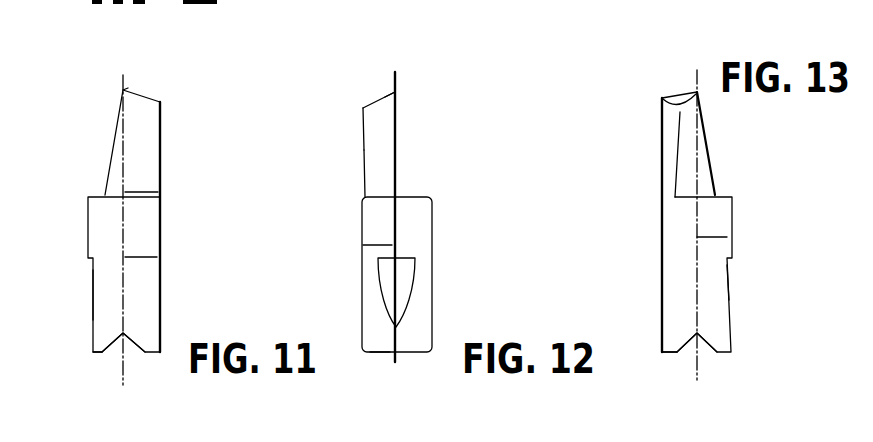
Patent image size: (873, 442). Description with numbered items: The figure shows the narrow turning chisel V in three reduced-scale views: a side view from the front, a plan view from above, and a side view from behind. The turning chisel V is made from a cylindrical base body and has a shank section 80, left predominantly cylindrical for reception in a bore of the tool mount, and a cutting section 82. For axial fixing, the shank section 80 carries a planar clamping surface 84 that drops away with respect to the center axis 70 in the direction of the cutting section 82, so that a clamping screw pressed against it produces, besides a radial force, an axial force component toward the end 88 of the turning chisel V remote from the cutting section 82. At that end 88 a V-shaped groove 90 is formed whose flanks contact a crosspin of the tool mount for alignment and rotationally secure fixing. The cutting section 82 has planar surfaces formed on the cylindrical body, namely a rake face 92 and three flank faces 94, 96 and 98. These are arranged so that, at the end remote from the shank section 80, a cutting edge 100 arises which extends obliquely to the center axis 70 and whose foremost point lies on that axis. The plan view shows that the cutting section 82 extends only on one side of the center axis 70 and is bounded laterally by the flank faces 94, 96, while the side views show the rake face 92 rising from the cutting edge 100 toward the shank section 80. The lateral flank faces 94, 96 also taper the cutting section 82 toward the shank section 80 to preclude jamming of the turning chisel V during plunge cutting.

In FIG. 11, the center axis 70 is at (126, 157).
In FIG. 12, the center axis 70 is at (397, 342).
In FIG. 13, the center axis 70 is at (698, 308).
In FIG. 11, the shank section 80 is at (141, 241).
In FIG. 12, the shank section 80 is at (377, 230).
In FIG. 13, the shank section 80 is at (712, 221).
In FIG. 11, the cutting section 82 is at (160, 127).
In FIG. 12, the cutting section 82 is at (386, 127).
In FIG. 13, the cutting section 82 is at (660, 122).
In FIG. 11, the clamping surface 84 is at (92, 293).
In FIG. 12, the clamping surface 84 is at (403, 285).
In FIG. 13, the clamping surface 84 is at (728, 282).
In FIG. 11, the end 88 is at (104, 358).
In FIG. 12, the end 88 is at (378, 357).
In FIG. 13, the end 88 is at (673, 358).
In FIG. 11, the V-shaped groove 90 is at (117, 343).
In FIG. 13, the V-shaped groove 90 is at (692, 343).
In FIG. 11, the rake face 92 is at (107, 165).
In FIG. 12, the rake face 92 is at (375, 122).
In FIG. 13, the rake face 92 is at (712, 165).
In FIG. 11, the flank face 94 is at (141, 176).
In FIG. 12, the flank face 94 is at (397, 161).
In FIG. 12, the flank face 96 is at (365, 163).
In FIG. 13, the flank face 96 is at (687, 161).
In FIG. 11, the flank face 98 is at (140, 93).
In FIG. 12, the flank face 98 is at (386, 92).
In FIG. 13, the flank face 98 is at (685, 90).
In FIG. 11, the cutting edge 100 is at (123, 90).
In FIG. 12, the cutting edge 100 is at (375, 96).
In FIG. 13, the cutting edge 100 is at (699, 97).
In FIG. 11, the turning chisel V is at (175, 205).
In FIG. 12, the turning chisel V is at (436, 204).
In FIG. 13, the turning chisel V is at (740, 195).